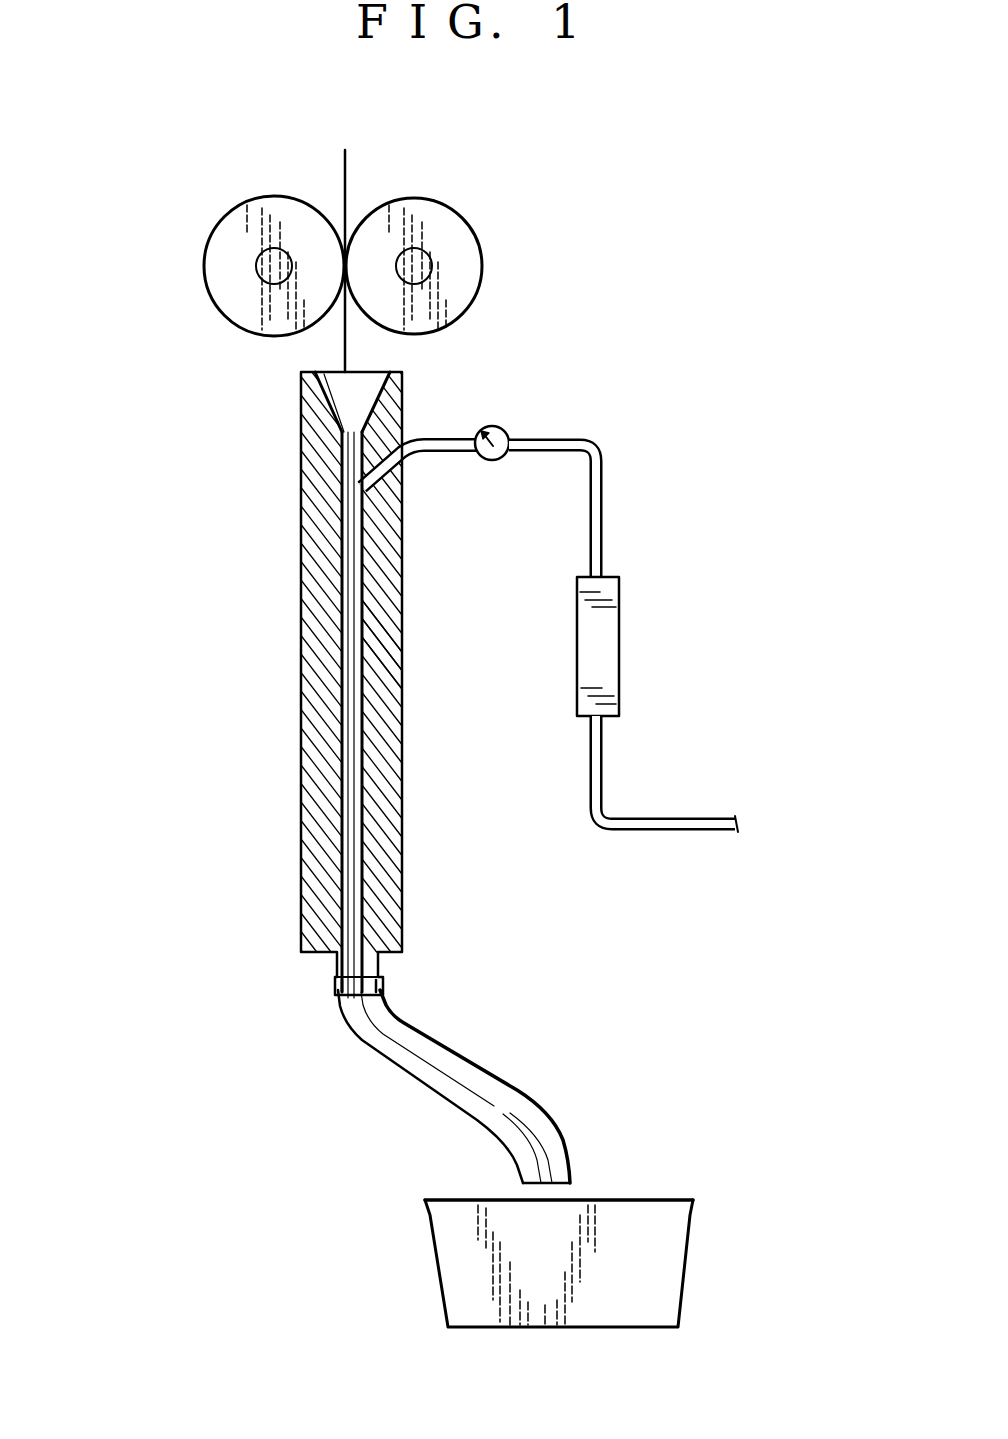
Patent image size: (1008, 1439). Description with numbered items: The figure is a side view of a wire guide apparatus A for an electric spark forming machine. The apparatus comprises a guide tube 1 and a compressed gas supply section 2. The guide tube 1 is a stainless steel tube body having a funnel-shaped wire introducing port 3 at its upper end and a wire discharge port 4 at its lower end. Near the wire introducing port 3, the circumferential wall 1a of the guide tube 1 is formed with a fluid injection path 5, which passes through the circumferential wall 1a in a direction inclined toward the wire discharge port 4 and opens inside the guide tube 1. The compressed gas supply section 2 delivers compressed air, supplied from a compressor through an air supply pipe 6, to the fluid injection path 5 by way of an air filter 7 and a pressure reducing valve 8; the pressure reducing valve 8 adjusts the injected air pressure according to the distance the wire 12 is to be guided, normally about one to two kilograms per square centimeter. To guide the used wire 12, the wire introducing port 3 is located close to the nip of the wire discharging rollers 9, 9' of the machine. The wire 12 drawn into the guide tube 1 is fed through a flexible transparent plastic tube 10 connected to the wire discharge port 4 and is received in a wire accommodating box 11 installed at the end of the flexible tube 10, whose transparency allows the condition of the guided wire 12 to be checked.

The guide tube 1 is at (316, 685).
The circumferential wall 1a is at (402, 630).
The compressed gas supply section 2 is at (611, 460).
The wire introducing port 3 is at (370, 373).
The wire discharge port 4 is at (383, 968).
The fluid injection path 5 is at (380, 500).
The air supply pipe 6 is at (601, 759).
The air filter 7 is at (619, 616).
The pressure reducing valve 8 is at (500, 425).
The wire discharging roller 9 is at (238, 228).
The wire discharging roller 9' is at (455, 247).
The flexible transparent plastic tube 10 is at (508, 1105).
The wire accommodating box 11 is at (690, 1262).
The wire 12 is at (343, 338).
The wire guide apparatus A is at (618, 932).